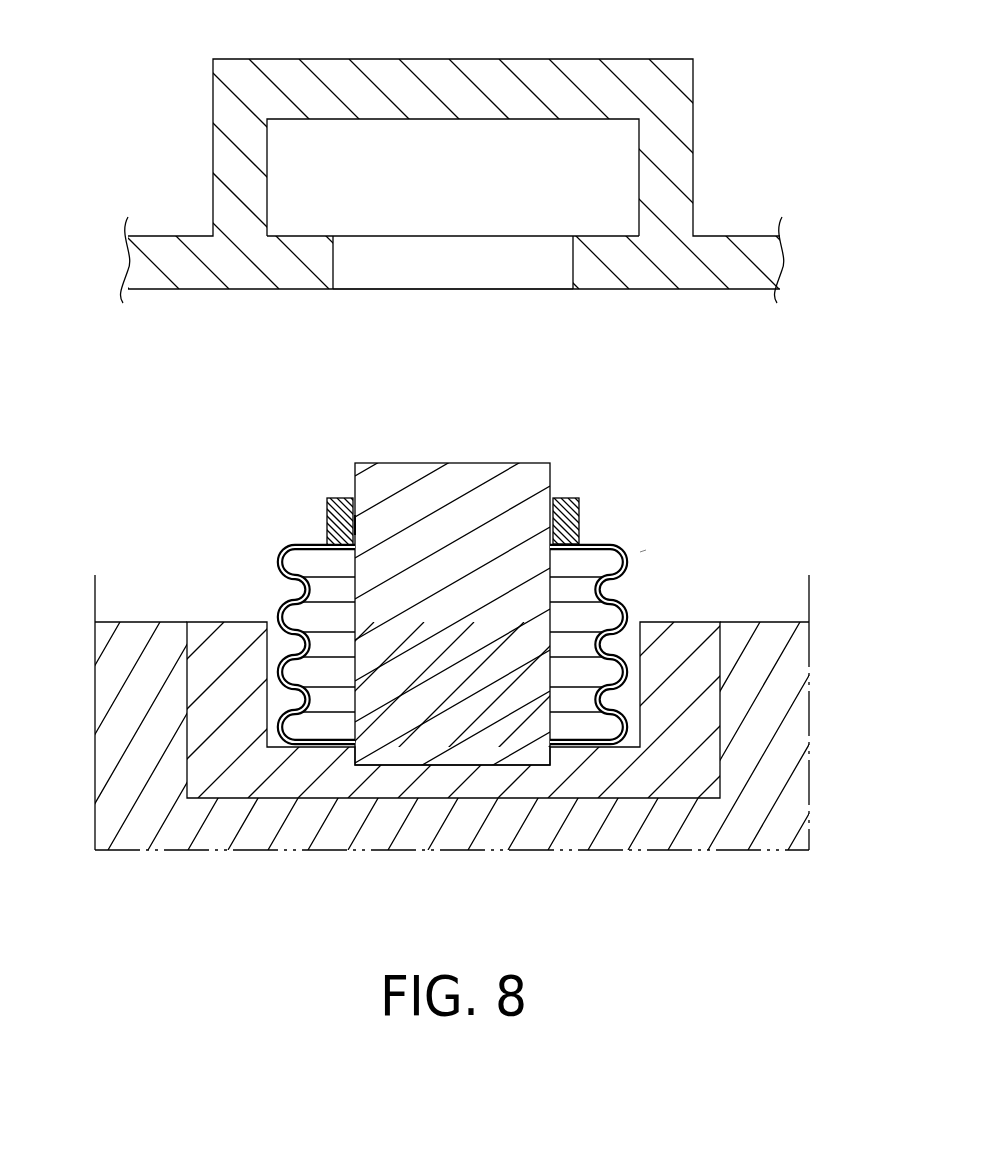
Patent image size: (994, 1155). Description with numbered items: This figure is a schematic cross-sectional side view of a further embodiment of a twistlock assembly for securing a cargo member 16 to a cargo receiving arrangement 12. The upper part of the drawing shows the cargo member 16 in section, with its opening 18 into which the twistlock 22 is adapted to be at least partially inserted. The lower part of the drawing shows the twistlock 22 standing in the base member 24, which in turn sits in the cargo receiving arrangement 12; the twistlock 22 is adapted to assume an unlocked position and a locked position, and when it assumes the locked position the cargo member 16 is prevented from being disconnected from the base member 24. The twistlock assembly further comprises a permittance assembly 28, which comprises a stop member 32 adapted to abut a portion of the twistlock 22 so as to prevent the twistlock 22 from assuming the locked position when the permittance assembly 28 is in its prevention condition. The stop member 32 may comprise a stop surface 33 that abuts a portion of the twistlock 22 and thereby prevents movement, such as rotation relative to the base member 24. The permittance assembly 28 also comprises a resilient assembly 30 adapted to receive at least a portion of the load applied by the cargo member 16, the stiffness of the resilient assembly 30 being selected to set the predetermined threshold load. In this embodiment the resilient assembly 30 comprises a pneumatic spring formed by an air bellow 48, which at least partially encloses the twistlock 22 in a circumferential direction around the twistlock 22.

The cargo receiving arrangement 12 is at (140, 750).
The cargo member 16 is at (238, 170).
The opening 18 is at (483, 253).
The twistlock 22 is at (483, 510).
The base member 24 is at (300, 772).
The permittance assembly 28 is at (378, 618).
The resilient assembly 30 is at (238, 582).
The stop member 32 is at (342, 499).
The stop surface 33 is at (355, 525).
The air bellow 48 is at (666, 543).